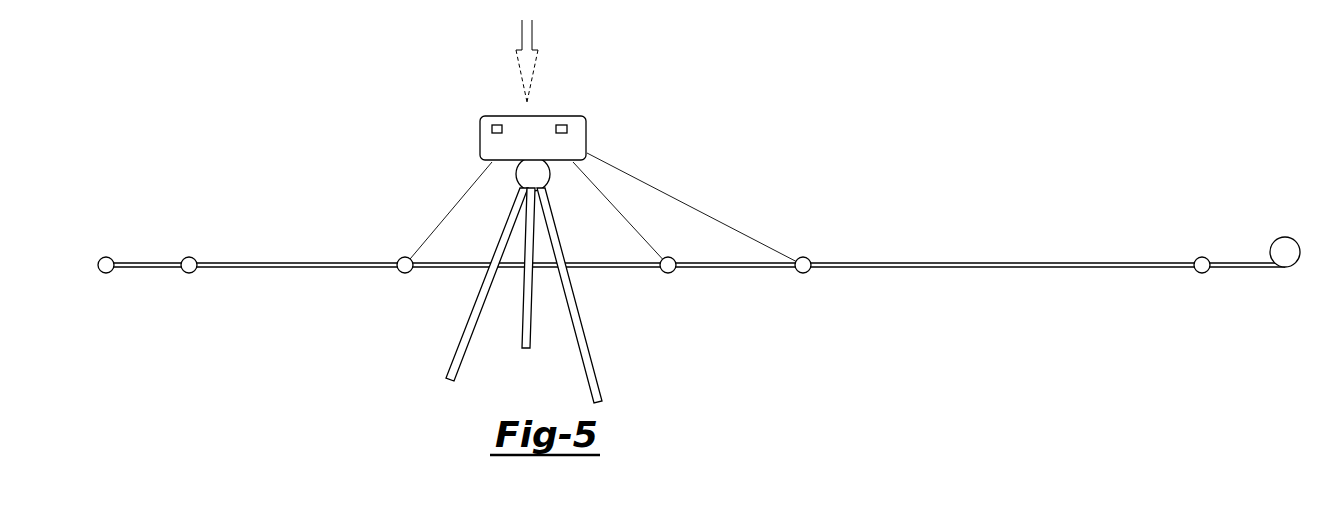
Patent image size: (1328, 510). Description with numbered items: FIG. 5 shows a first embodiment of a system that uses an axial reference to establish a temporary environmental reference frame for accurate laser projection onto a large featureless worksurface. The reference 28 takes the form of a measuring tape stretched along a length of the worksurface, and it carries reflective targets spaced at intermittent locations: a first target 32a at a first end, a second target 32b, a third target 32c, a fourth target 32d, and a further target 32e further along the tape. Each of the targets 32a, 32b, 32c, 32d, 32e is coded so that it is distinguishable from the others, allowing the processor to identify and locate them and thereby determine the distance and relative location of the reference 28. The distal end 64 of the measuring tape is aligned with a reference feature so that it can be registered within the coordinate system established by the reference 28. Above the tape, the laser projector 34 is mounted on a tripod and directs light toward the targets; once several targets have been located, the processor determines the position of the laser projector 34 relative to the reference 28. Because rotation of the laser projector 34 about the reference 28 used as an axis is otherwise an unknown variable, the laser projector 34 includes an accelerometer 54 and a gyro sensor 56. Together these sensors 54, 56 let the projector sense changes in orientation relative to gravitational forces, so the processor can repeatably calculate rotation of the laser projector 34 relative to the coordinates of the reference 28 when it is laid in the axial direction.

The reference 28 is at (992, 262).
The first target 32a is at (187, 273).
The second target 32b is at (403, 273).
The third target 32c is at (665, 273).
The fourth target 32d is at (800, 273).
The target 32e is at (1198, 273).
The laser projector 34 is at (540, 115).
The accelerometer 54 is at (497, 123).
The gyro sensor 56 is at (567, 129).
The distal end 64 is at (108, 257).